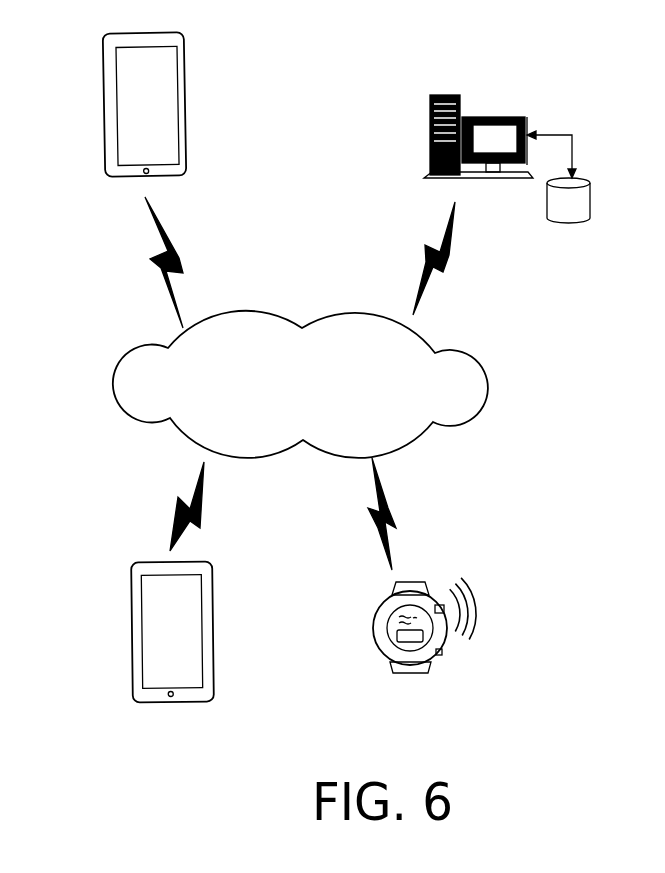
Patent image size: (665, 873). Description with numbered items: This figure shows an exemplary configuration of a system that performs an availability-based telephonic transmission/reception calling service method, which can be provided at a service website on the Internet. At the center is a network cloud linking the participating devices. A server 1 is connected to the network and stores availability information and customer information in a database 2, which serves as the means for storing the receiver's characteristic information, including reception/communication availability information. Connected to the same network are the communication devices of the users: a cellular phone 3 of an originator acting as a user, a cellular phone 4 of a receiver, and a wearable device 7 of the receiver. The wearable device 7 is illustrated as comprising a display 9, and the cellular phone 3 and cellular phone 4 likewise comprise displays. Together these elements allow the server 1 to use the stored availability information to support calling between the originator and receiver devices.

The server 1 is at (430, 137).
The database 2 is at (591, 191).
The cellular phone 3 is at (187, 45).
The cellular phone 4 is at (213, 665).
The wearable device 7 is at (403, 656).
The display 9 is at (394, 633).